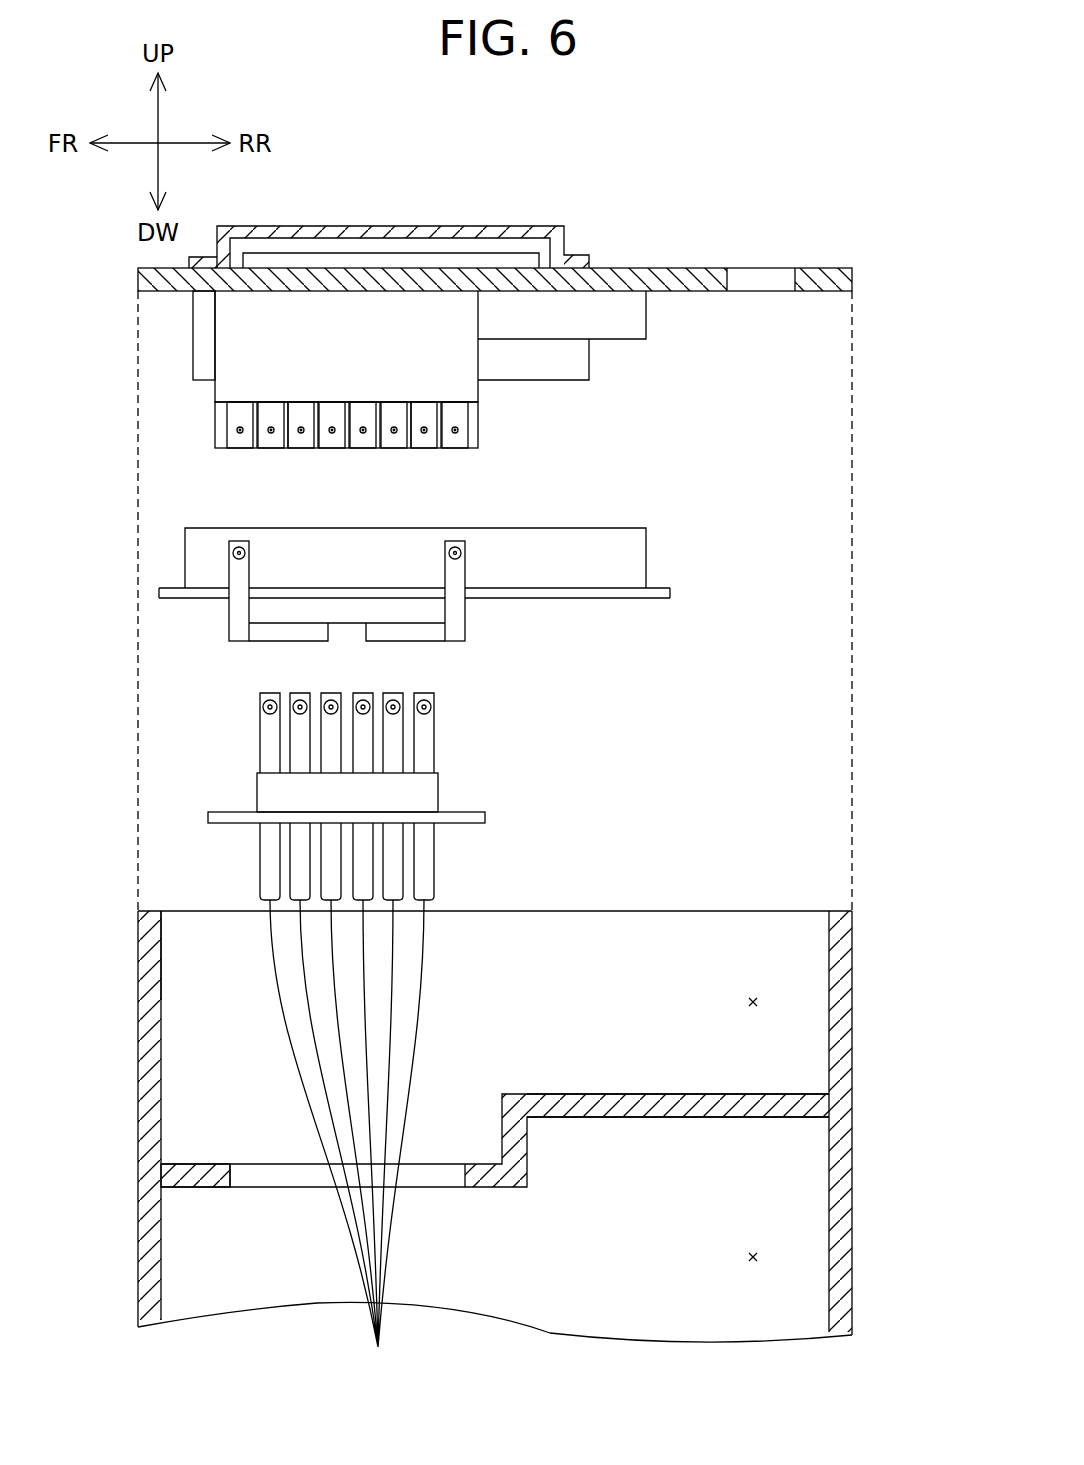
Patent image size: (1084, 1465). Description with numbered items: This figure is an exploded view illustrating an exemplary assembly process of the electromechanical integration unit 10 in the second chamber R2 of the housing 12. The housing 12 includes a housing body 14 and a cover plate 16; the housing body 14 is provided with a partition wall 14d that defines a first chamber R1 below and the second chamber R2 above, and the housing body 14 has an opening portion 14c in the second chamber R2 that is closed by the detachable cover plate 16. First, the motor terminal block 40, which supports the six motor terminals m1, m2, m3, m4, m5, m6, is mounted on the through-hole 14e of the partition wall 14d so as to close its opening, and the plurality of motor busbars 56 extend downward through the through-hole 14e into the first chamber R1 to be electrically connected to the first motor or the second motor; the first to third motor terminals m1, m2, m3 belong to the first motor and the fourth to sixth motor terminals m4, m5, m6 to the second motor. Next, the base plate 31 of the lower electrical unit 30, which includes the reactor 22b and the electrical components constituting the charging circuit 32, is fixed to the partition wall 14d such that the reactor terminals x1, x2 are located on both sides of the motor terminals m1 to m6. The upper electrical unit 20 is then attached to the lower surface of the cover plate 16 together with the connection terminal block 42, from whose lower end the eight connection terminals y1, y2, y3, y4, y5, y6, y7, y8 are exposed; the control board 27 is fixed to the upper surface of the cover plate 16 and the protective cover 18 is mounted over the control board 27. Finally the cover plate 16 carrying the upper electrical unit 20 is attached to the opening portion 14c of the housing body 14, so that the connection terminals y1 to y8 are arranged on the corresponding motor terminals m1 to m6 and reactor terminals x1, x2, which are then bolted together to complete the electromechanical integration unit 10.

The electromechanical integration unit 10 is at (833, 155).
The housing 12 is at (502, 742).
The housing body 14 is at (160, 1053).
The opening portion 14c is at (162, 962).
The partition wall 14d is at (742, 1117).
The through-hole 14e is at (230, 1182).
The cover plate 16 is at (313, 283).
The protective cover 18 is at (521, 230).
The upper electrical unit 20 is at (193, 345).
The reactor 22b is at (347, 613).
The control board 27 is at (431, 263).
The lower electrical unit 30 is at (105, 528).
The base plate 31 is at (675, 593).
The charging circuit 32 is at (607, 543).
The motor terminal block 40 is at (438, 793).
The connection terminal block 42 is at (646, 315).
The motor busbars 56 is at (347, 1141).
The first reactor terminal x1 is at (243, 545).
The second reactor terminal x2 is at (460, 545).
The first connection terminal y1 is at (240, 412).
The second connection terminal y2 is at (271, 412).
The third connection terminal y3 is at (301, 412).
The fourth connection terminal y4 is at (332, 412).
The fifth connection terminal y5 is at (363, 412).
The sixth connection terminal y6 is at (394, 412).
The seventh connection terminal y7 is at (424, 412).
The eighth connection terminal y8 is at (455, 412).
The first motor terminal m1 is at (265, 693).
The second motor terminal m2 is at (297, 693).
The third motor terminal m3 is at (333, 693).
The fourth motor terminal m4 is at (370, 693).
The fifth motor terminal m5 is at (398, 693).
The sixth motor terminal m6 is at (427, 693).
The first chamber R1 is at (753, 1257).
The second chamber R2 is at (753, 1002).